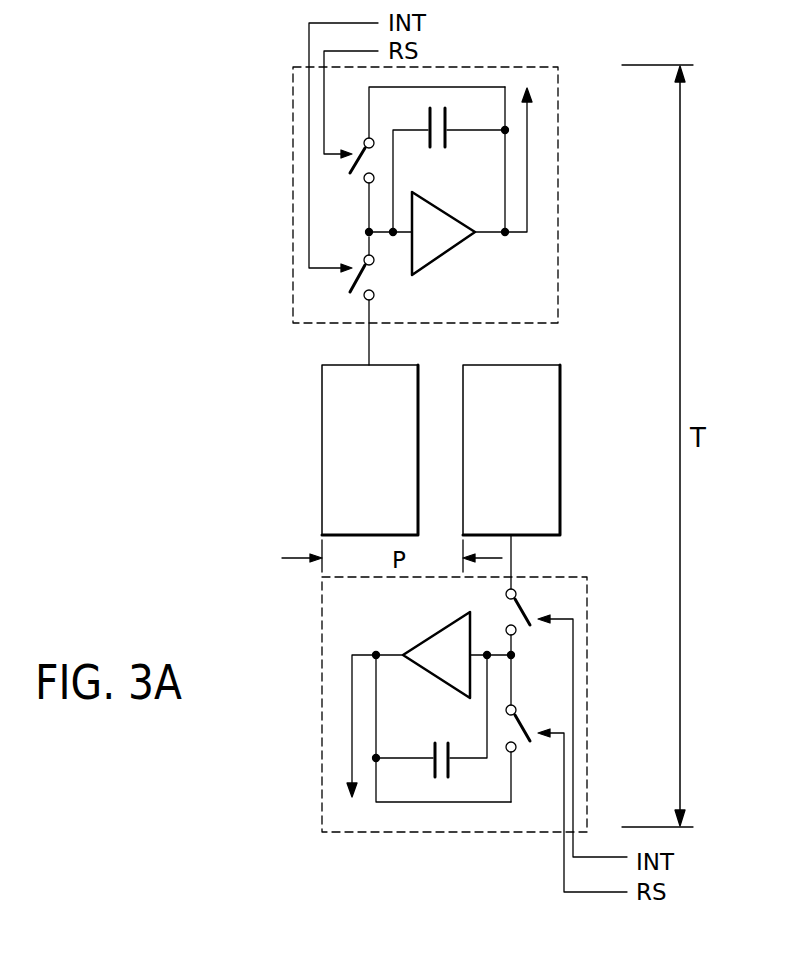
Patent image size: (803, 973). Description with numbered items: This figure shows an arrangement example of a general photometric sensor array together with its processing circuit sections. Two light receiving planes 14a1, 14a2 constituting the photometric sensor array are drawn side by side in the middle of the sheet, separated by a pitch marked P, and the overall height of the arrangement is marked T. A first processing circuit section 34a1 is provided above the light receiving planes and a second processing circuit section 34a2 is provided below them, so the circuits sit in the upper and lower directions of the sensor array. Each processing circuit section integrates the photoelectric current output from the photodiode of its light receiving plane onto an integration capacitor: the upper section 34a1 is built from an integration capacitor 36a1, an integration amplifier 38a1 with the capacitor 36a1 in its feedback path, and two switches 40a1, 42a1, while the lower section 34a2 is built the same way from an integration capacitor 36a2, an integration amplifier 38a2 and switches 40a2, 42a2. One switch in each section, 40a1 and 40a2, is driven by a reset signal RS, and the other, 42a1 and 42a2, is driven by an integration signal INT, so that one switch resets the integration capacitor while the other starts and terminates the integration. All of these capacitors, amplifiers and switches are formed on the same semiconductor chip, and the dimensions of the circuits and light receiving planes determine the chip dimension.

The processing circuit section 34a1 is at (293, 130).
The switch 40a1 is at (343, 177).
The switch 42a1 is at (343, 282).
The integration capacitor 36a1 is at (437, 150).
The integration amplifier 38a1 is at (447, 255).
The light receiving plane 14a1 is at (322, 442).
The light receiving plane 14a2 is at (560, 437).
The processing circuit section 34a2 is at (322, 776).
The switch 42a2 is at (538, 597).
The switch 40a2 is at (538, 712).
The integration amplifier 38a2 is at (428, 635).
The integration capacitor 36a2 is at (442, 787).